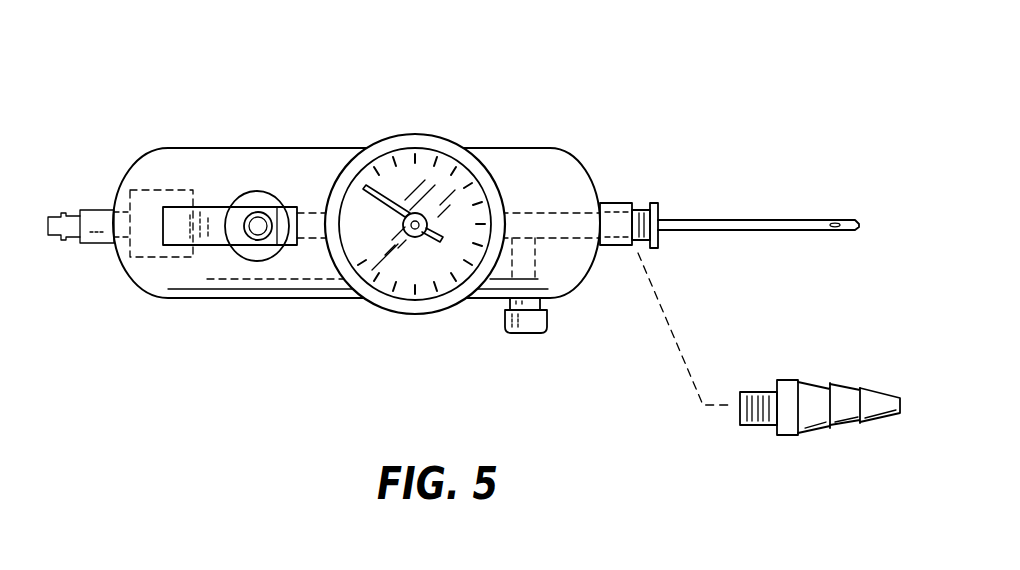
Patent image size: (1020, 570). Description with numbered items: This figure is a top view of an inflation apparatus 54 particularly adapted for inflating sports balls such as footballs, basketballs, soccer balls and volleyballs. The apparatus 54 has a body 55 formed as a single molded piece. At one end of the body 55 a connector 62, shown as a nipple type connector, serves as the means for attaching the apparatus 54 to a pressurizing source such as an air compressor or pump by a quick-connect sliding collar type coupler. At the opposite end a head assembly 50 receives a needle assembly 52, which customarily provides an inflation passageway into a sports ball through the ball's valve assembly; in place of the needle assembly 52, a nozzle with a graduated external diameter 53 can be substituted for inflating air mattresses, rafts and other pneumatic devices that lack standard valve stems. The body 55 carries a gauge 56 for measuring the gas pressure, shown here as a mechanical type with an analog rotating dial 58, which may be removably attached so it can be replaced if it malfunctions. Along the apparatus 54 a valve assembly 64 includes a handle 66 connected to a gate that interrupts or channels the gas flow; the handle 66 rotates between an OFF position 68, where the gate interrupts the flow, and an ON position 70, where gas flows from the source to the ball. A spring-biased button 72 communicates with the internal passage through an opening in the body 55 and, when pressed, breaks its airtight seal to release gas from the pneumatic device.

The head assembly 50 is at (612, 202).
The needle assembly 52 is at (757, 219).
The nozzle with a graduated external diameter 53 is at (807, 430).
The apparatus 54 is at (318, 119).
The body 55 is at (529, 167).
The gauge 56 is at (425, 134).
The rotating dial 58 is at (390, 255).
The connector 62 is at (100, 210).
The valve assembly 64 is at (258, 260).
The handle 66 is at (215, 246).
The OFF position 68 is at (248, 148).
The ON position 70 is at (137, 258).
The button 72 is at (523, 326).